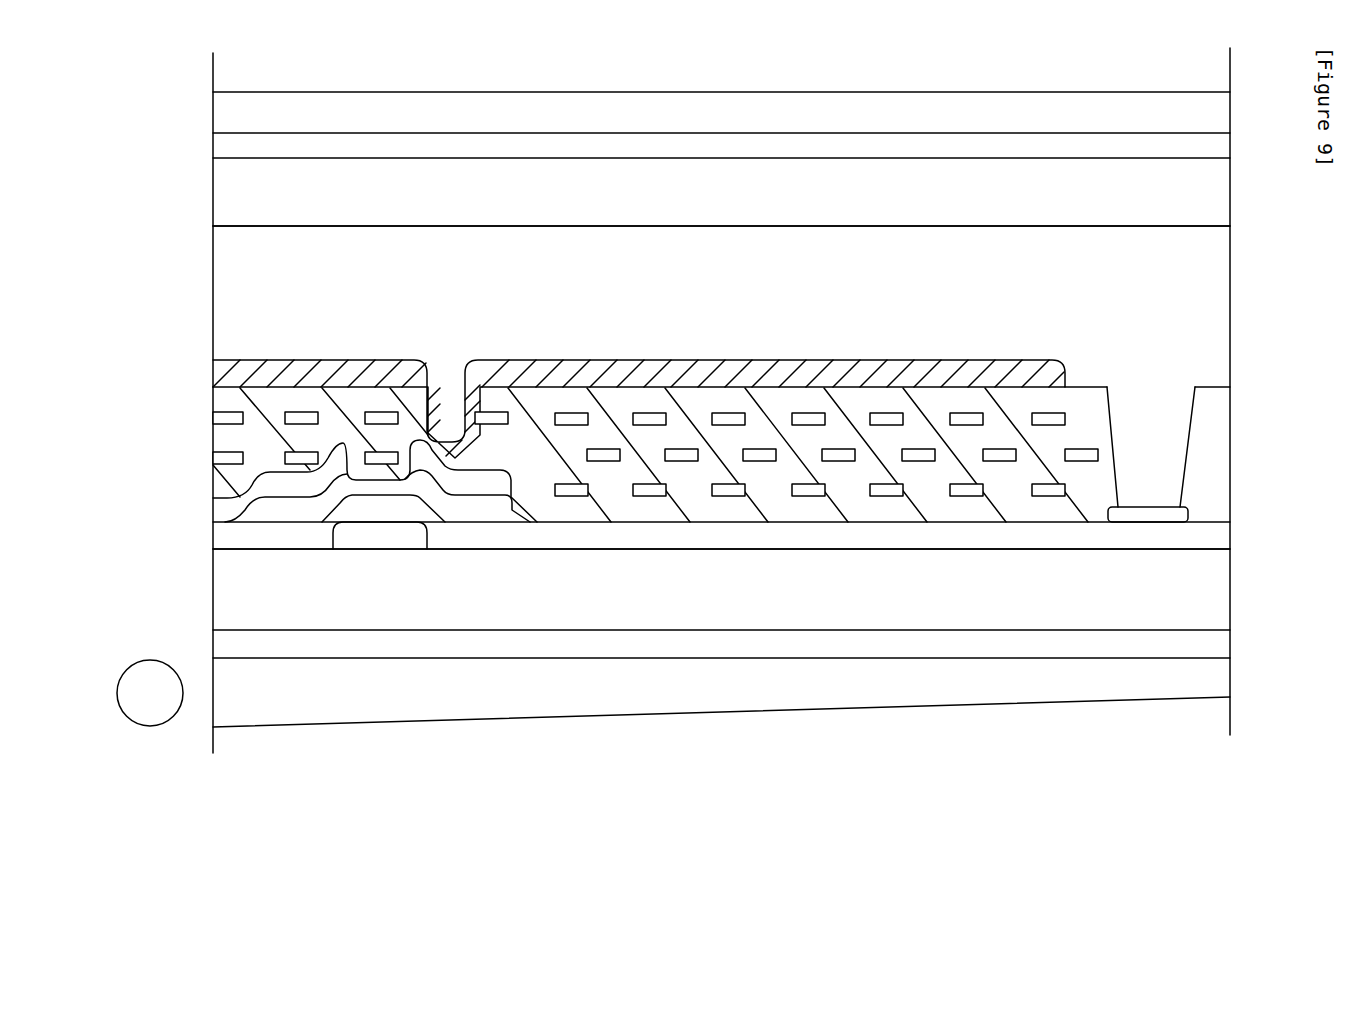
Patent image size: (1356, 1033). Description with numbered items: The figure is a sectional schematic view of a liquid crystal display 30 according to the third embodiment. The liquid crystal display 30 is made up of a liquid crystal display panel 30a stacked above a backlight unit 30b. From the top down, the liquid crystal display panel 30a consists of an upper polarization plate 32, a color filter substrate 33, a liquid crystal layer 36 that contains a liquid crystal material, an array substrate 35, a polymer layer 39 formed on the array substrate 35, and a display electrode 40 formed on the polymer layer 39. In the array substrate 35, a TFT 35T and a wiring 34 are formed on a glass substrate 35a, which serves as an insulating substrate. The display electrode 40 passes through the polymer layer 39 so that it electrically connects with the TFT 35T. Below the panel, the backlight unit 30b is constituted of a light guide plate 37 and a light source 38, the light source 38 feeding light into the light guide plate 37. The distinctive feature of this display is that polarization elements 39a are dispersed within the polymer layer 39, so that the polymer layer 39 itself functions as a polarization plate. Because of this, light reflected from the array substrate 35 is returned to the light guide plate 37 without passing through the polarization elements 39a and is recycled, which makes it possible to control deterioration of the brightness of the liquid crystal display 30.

The liquid crystal display 30 is at (730, 728).
The liquid crystal display panel 30a is at (132, 93).
The backlight unit 30b is at (270, 782).
The upper polarization plate 32 is at (213, 115).
The color filter substrate 33 is at (213, 196).
The liquid crystal layer 36 is at (213, 291).
The display electrode 40 is at (213, 377).
The polymer layer 39 is at (686, 422).
The polarization elements 39a is at (571, 412).
The wiring 34 is at (1153, 507).
The array substrate 35 is at (686, 463).
The TFT 35T is at (357, 452).
The glass substrate 35a is at (730, 541).
The light guide plate 37 is at (245, 708).
The light source 38 is at (150, 708).